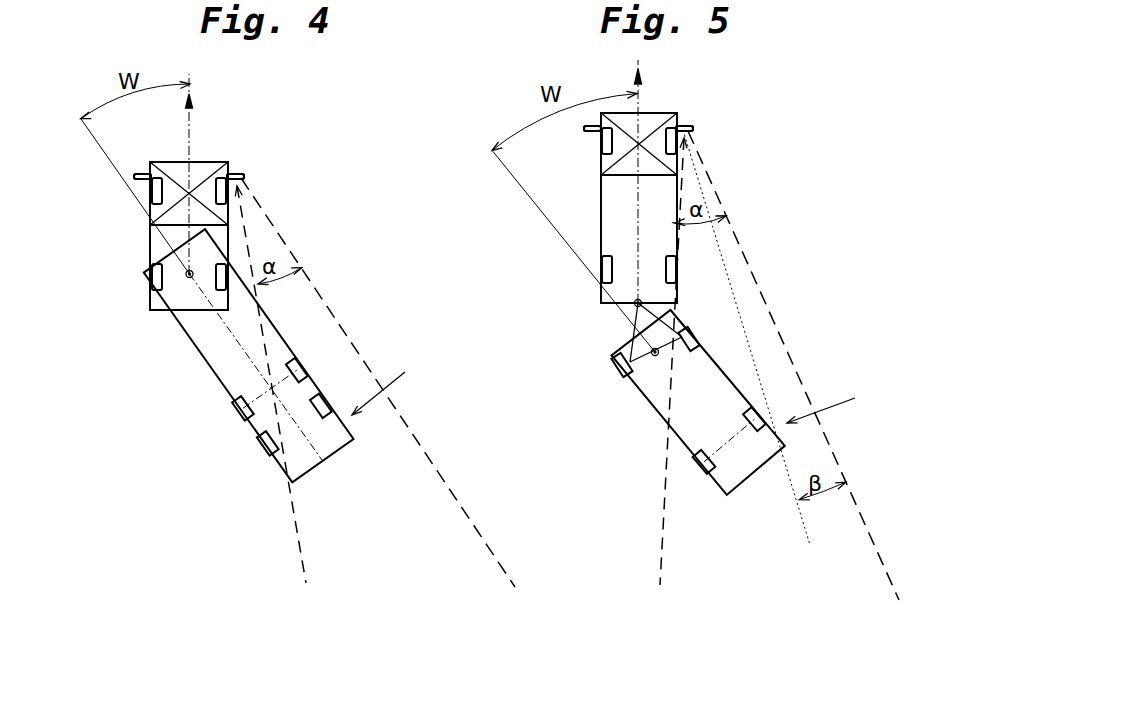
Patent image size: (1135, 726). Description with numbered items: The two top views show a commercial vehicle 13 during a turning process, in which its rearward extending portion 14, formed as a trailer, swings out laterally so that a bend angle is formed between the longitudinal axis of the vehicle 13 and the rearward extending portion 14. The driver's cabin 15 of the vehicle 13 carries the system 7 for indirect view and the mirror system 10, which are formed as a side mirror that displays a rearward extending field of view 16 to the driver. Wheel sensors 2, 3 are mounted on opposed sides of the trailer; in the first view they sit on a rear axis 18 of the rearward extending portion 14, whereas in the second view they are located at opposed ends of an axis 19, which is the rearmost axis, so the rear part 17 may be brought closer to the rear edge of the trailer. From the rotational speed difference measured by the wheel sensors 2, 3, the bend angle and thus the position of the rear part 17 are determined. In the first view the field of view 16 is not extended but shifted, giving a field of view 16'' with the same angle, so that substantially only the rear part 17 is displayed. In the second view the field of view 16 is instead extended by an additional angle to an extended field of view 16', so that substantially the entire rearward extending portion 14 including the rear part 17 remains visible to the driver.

In FIG. 4, the wheel sensor 2 is at (300, 367).
In FIG. 5, the wheel sensor 2 is at (750, 411).
In FIG. 4, the wheel sensor 3 is at (256, 404).
In FIG. 5, the wheel sensor 3 is at (702, 462).
In FIG. 4, the system for indirect view 7 is at (246, 178).
In FIG. 5, the system for indirect view 7 is at (694, 131).
In FIG. 4, the mirror system 10 is at (189, 176).
In FIG. 5, the mirror system 10 is at (638, 128).
In FIG. 4, the vehicle 13 is at (222, 232).
In FIG. 5, the vehicle 13 is at (662, 191).
In FIG. 4, the rearward extending portion 14 is at (243, 332).
In FIG. 5, the rearward extending portion 14 is at (704, 373).
In FIG. 4, the driver's cabin 15 is at (163, 218).
In FIG. 5, the driver's cabin 15 is at (607, 163).
In FIG. 5, the field of view 16 is at (746, 337).
In FIG. 5, the extended field of view 16' is at (793, 365).
In FIG. 4, the shifted field of view 16'' is at (378, 382).
In FIG. 4, the rear part 17 is at (395, 382).
In FIG. 5, the rear part 17 is at (838, 400).
In FIG. 4, the rear axis 18 is at (265, 390).
In FIG. 5, the axis 19 is at (729, 441).